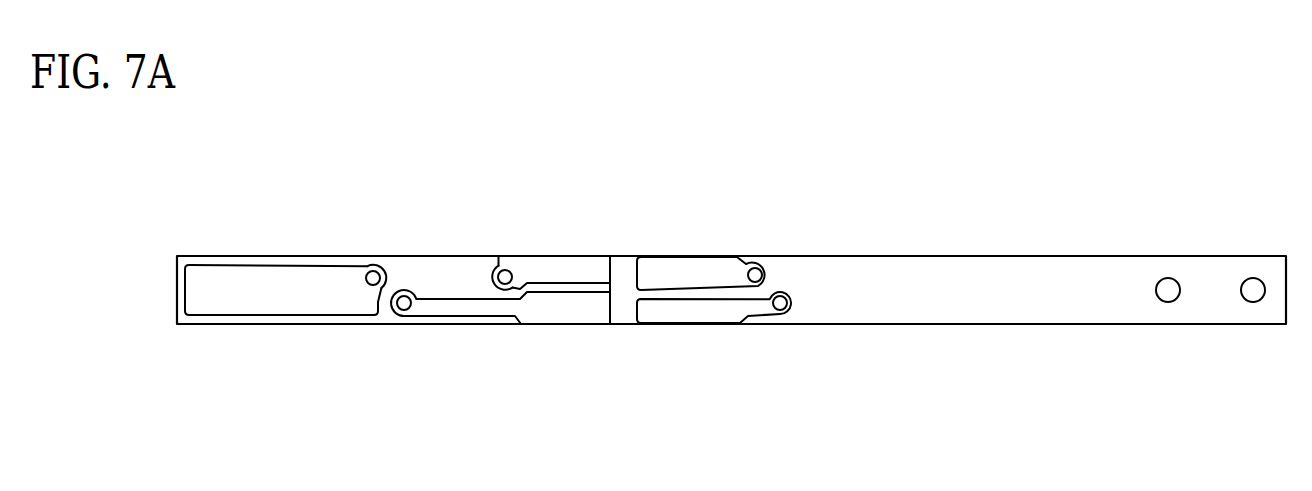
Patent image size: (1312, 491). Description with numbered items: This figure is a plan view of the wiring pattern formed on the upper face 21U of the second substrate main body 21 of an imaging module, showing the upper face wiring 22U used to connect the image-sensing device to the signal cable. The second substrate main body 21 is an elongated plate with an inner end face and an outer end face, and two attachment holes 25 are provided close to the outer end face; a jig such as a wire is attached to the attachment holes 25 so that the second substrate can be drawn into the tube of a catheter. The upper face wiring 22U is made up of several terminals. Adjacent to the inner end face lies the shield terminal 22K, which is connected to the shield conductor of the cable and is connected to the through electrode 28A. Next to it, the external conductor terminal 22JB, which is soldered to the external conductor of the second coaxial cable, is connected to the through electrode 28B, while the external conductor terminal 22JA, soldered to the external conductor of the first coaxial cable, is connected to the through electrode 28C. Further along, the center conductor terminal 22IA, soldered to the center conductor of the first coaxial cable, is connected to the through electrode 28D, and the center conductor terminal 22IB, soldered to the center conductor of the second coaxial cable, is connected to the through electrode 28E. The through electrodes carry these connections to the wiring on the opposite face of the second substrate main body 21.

The upper face 21U is at (989, 189).
The second substrate main body 21 is at (731, 218).
The attachment holes 25 is at (1249, 286).
The upper face wiring 22U is at (491, 286).
The shield terminal 22K is at (280, 290).
The external conductor terminal 22JA is at (558, 273).
The external conductor terminal 22JB is at (560, 311).
The center conductor terminal 22IA is at (687, 273).
The center conductor terminal 22IB is at (697, 311).
The through electrode 28A is at (370, 265).
The through electrode 28B is at (405, 290).
The through electrode 28C is at (504, 264).
The through electrode 28D is at (755, 264).
The through electrode 28E is at (783, 292).